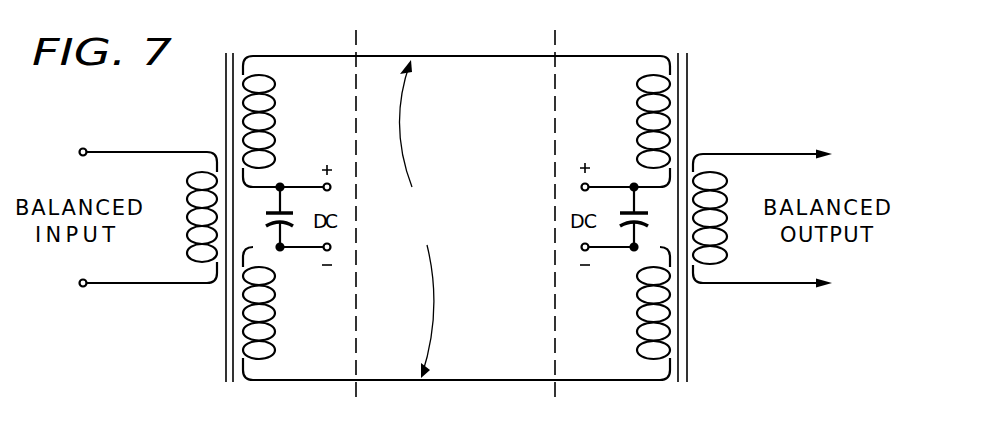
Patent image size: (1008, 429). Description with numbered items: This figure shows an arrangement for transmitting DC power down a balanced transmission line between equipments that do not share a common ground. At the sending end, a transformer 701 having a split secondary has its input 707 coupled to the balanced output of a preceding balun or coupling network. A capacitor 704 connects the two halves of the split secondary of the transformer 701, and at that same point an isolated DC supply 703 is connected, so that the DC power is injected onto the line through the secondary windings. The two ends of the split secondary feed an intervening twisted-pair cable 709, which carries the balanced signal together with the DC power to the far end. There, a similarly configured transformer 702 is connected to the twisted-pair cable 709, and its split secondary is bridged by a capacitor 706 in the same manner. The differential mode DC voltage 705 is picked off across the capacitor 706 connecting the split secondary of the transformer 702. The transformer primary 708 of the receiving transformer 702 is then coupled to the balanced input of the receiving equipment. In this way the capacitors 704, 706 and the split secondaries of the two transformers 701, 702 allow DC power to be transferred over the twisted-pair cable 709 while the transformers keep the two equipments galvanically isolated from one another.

The transformer 701 is at (216, 137).
The transformer 702 is at (703, 122).
The isolated DC supply 703 is at (332, 233).
The capacitor 704 is at (292, 207).
The differential mode DC voltage 705 is at (577, 235).
The capacitor 706 is at (618, 207).
The input 707 is at (167, 153).
The transformer primary 708 is at (745, 157).
The twisted-pair cable 709 is at (497, 58).